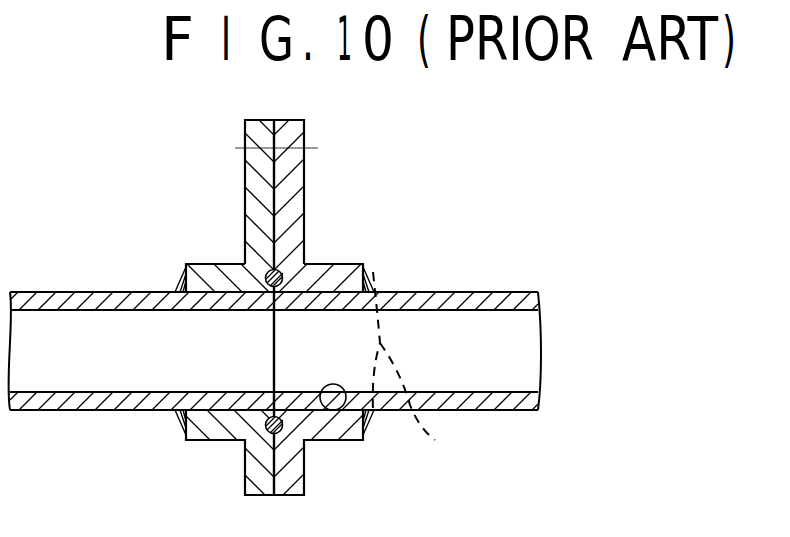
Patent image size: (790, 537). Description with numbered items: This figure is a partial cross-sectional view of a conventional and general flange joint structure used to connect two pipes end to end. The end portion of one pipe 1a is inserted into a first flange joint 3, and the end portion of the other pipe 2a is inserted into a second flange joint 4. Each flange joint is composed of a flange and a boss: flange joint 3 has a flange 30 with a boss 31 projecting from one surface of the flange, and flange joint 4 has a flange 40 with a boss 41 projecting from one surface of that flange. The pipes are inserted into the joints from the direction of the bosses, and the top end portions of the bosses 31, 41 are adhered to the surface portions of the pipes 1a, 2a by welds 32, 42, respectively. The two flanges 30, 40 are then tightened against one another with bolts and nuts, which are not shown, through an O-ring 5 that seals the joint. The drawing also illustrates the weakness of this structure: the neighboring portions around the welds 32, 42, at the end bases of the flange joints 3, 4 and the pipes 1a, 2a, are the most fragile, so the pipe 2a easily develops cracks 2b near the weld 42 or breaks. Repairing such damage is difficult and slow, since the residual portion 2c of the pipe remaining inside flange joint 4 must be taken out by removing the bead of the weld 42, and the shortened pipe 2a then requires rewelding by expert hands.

The pipe 1a is at (132, 410).
The pipe 2a is at (500, 293).
The cracks 2b is at (424, 364).
The residual portion 2c is at (339, 406).
The flange joint 3 is at (217, 206).
The flange 30 is at (245, 165).
The boss 31 is at (219, 241).
The weld 32 is at (182, 287).
The flange joint 4 is at (357, 206).
The flange 40 is at (304, 164).
The boss 41 is at (340, 264).
The weld 42 is at (364, 416).
The O-ring 5 is at (258, 309).